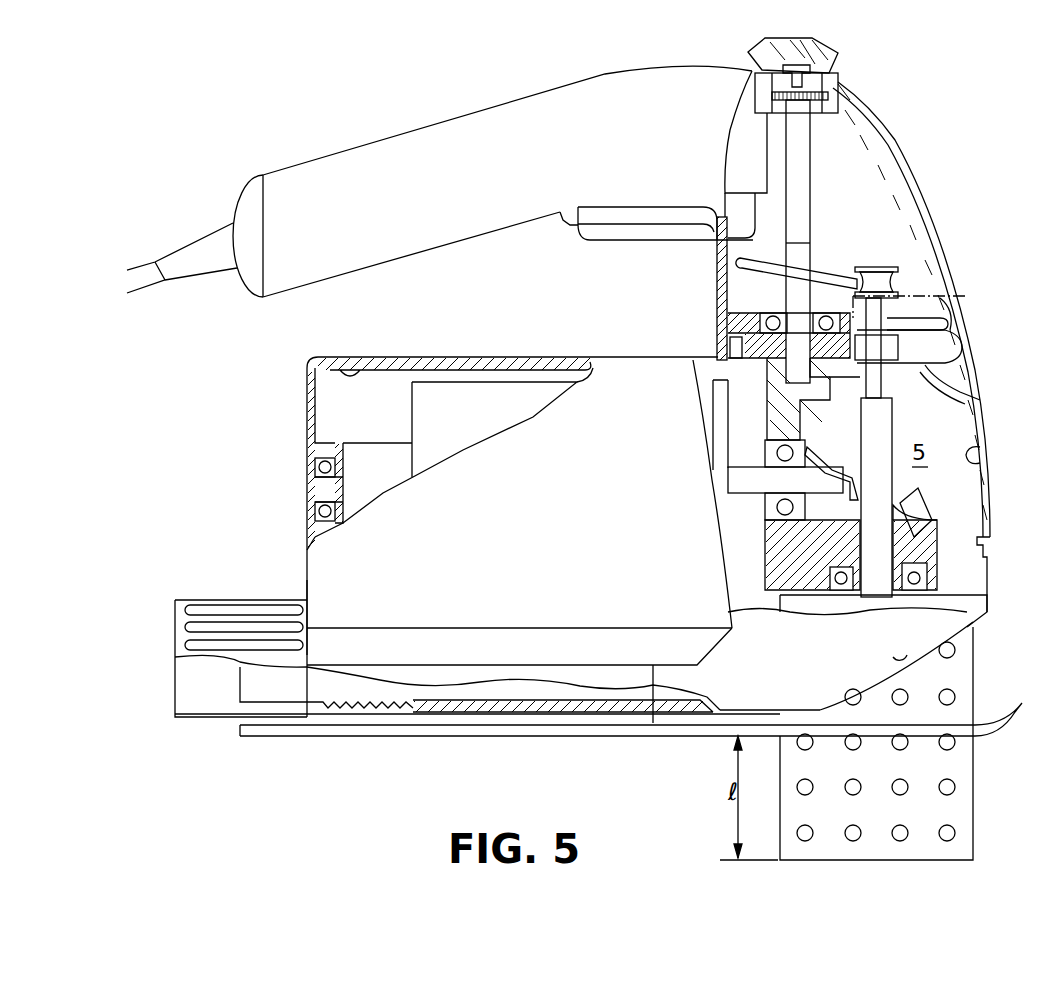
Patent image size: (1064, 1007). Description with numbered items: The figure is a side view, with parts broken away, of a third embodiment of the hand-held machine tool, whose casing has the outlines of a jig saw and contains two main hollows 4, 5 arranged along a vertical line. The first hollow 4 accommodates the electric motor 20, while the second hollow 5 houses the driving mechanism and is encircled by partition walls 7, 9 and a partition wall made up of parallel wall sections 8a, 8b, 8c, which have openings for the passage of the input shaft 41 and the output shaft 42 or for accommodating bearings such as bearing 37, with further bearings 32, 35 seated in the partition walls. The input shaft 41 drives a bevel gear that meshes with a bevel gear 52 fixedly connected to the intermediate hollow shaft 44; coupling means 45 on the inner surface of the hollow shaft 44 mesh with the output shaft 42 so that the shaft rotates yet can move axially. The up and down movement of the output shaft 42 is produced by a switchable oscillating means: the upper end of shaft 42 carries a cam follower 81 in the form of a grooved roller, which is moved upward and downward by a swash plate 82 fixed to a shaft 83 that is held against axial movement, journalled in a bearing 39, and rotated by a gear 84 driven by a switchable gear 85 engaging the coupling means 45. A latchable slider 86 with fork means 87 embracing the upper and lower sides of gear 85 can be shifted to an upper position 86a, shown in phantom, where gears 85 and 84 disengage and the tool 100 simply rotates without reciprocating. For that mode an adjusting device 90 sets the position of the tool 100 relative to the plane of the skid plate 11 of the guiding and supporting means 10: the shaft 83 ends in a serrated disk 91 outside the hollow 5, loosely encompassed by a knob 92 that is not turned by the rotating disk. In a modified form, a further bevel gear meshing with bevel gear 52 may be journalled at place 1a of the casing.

The place of the casing 1a is at (985, 452).
The main hollow 4 is at (360, 370).
The main hollow 5 is at (876, 347).
The partition wall 7 is at (778, 411).
The wall section 8a is at (731, 325).
The wall section 8b is at (973, 403).
The wall section 8c is at (728, 373).
The partition wall 9 is at (767, 610).
The guiding and supporting means 10 is at (352, 743).
The skid plate 11 is at (552, 728).
The electric motor 20 is at (440, 405).
The bearing 32 is at (760, 451).
The bearing 35 is at (836, 598).
The bearing 37 is at (891, 405).
The bearing 39 is at (727, 280).
The input shaft 41 is at (757, 480).
The output shaft 42 is at (878, 500).
The intermediate hollow shaft 44 is at (937, 570).
The coupling means 45 is at (935, 628).
The bevel gear 52 is at (990, 537).
The cam follower 81 is at (877, 267).
The swash plate 82 is at (828, 268).
The shaft 83 is at (797, 193).
The gear 84 is at (731, 344).
The switchable gear 85 is at (927, 370).
The latchable slider 86 is at (943, 345).
The upper position of slider 86a is at (945, 300).
The fork means 87 is at (912, 327).
The adjusting device 90 is at (855, 71).
The disk 91 is at (797, 103).
The knob 92 is at (812, 50).
The tool 100 is at (973, 823).